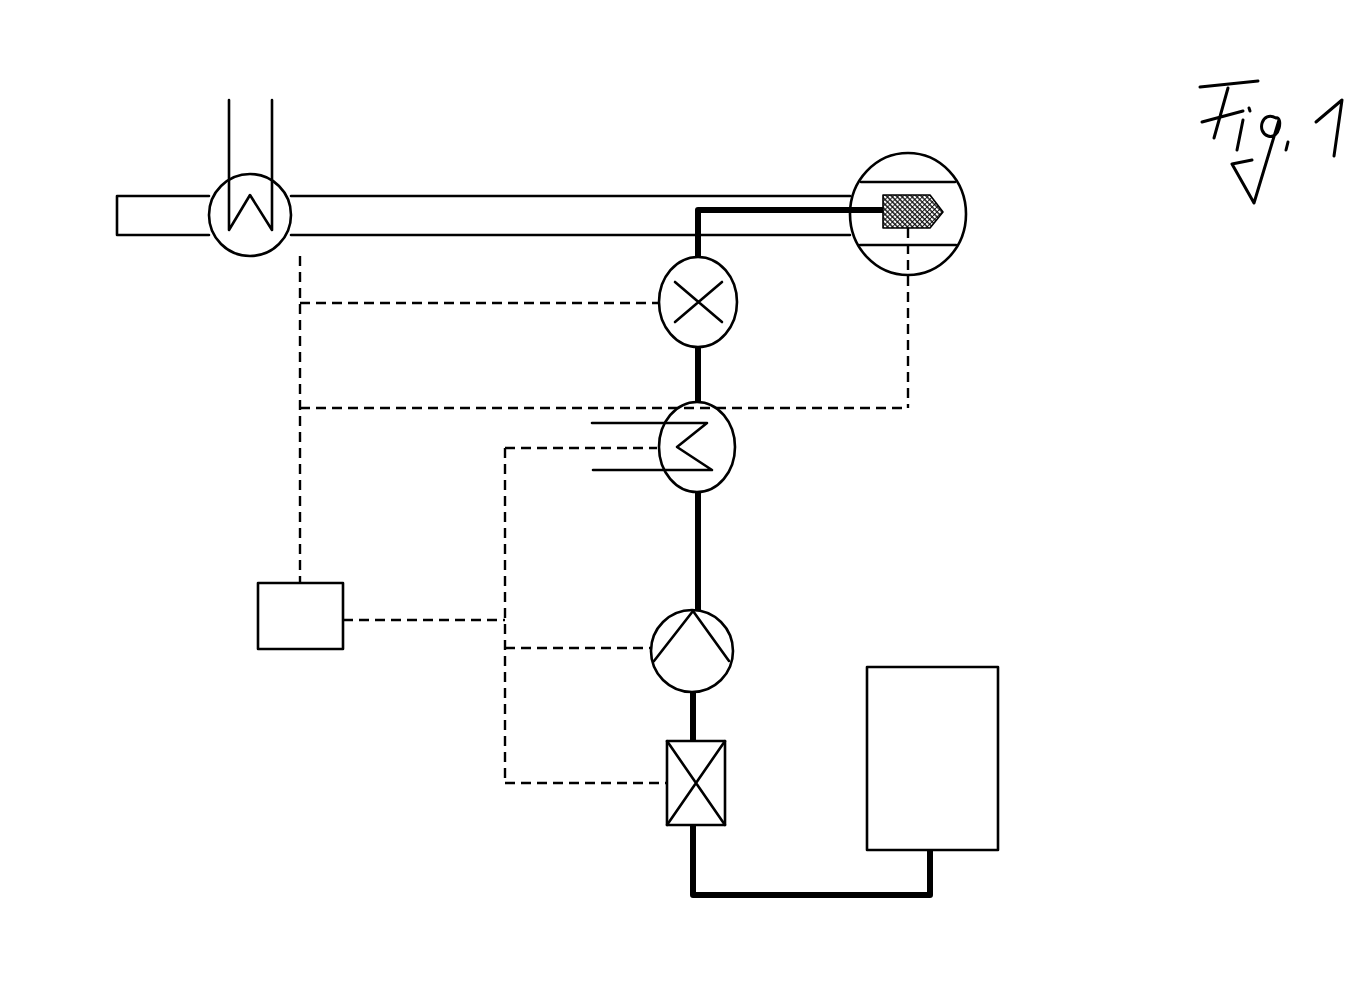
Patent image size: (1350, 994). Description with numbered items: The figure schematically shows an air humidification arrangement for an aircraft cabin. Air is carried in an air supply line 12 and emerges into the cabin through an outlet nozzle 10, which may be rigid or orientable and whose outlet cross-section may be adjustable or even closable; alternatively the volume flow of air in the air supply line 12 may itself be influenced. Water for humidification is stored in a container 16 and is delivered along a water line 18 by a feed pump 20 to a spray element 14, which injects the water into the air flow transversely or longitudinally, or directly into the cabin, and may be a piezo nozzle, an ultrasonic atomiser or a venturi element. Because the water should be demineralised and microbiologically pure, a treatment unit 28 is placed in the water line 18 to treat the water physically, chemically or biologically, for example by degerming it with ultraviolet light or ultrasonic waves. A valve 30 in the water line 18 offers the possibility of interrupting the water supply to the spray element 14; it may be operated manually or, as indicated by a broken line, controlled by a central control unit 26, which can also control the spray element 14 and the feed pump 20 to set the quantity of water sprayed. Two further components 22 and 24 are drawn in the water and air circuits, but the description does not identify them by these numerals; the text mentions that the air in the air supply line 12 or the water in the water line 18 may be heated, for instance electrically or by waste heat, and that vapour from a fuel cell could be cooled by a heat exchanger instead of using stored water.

The outlet nozzle 10 is at (935, 92).
The air supply line 12 is at (505, 137).
The spray element 14 is at (990, 157).
The container 16 is at (1073, 757).
The water line 18 is at (780, 548).
The feed pump 20 is at (797, 652).
The heating element 22 is at (795, 450).
The heat exchanger 24 is at (225, 330).
The central control unit 26 is at (268, 732).
The treatment unit 28 is at (825, 310).
The valve 30 is at (665, 806).